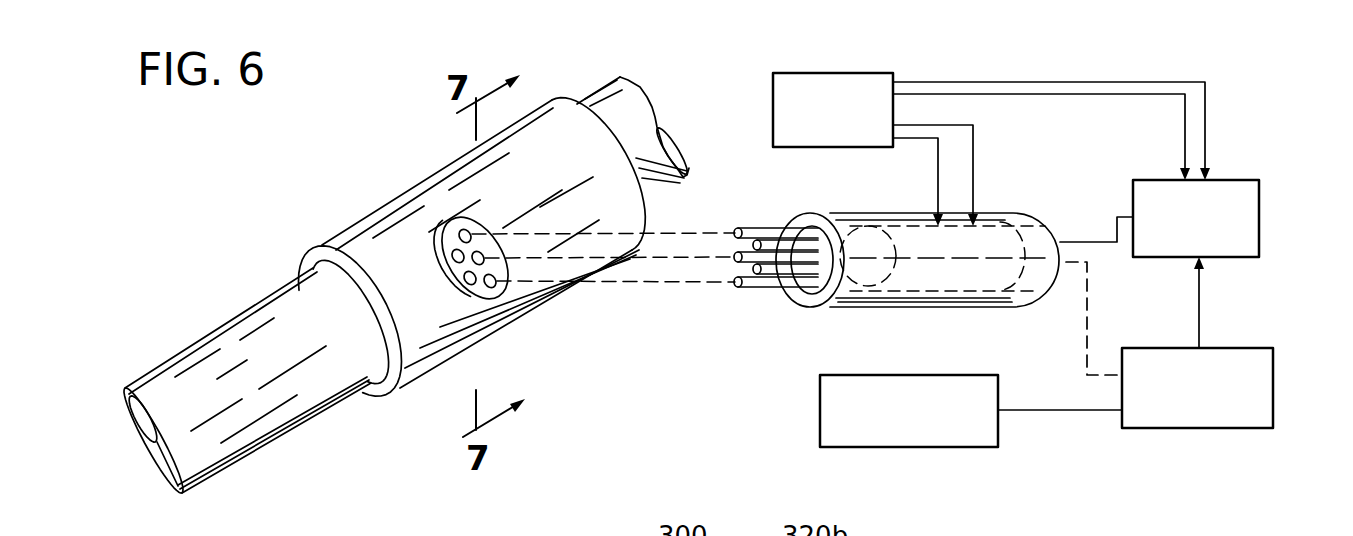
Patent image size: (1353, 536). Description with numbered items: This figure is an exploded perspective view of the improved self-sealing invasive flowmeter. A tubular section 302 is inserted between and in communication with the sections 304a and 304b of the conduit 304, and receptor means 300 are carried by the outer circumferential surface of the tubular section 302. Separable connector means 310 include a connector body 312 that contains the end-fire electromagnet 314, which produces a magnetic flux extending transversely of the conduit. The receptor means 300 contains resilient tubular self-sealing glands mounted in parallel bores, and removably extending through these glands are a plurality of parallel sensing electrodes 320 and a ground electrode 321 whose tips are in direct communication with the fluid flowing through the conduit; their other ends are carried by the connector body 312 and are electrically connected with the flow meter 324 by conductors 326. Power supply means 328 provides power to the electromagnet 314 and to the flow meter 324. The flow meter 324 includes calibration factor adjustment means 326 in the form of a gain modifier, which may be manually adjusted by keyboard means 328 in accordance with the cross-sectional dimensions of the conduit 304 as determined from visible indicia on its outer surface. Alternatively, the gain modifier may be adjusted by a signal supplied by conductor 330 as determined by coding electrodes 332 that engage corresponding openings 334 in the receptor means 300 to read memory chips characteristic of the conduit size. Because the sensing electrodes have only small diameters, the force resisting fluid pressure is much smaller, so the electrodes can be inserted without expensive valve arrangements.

The receptor means 300 is at (442, 240).
The tubular section 302 is at (358, 247).
The conduit 304 is at (233, 425).
The conduit section 304a is at (218, 333).
The conduit section 304b is at (633, 97).
The separable connector means 310 is at (829, 313).
The connector body 312 is at (940, 308).
The end-fire electromagnet 314 is at (1027, 180).
The sensing electrodes 320 is at (748, 228).
The ground electrode 321 is at (733, 257).
The flow meter 324 is at (1237, 193).
The calibration factor adjustment means 326 is at (1082, 238).
The power supply means 328 is at (893, 73).
The conductor 330 is at (1097, 312).
The coding electrodes 332 is at (808, 263).
The openings 334 is at (470, 284).